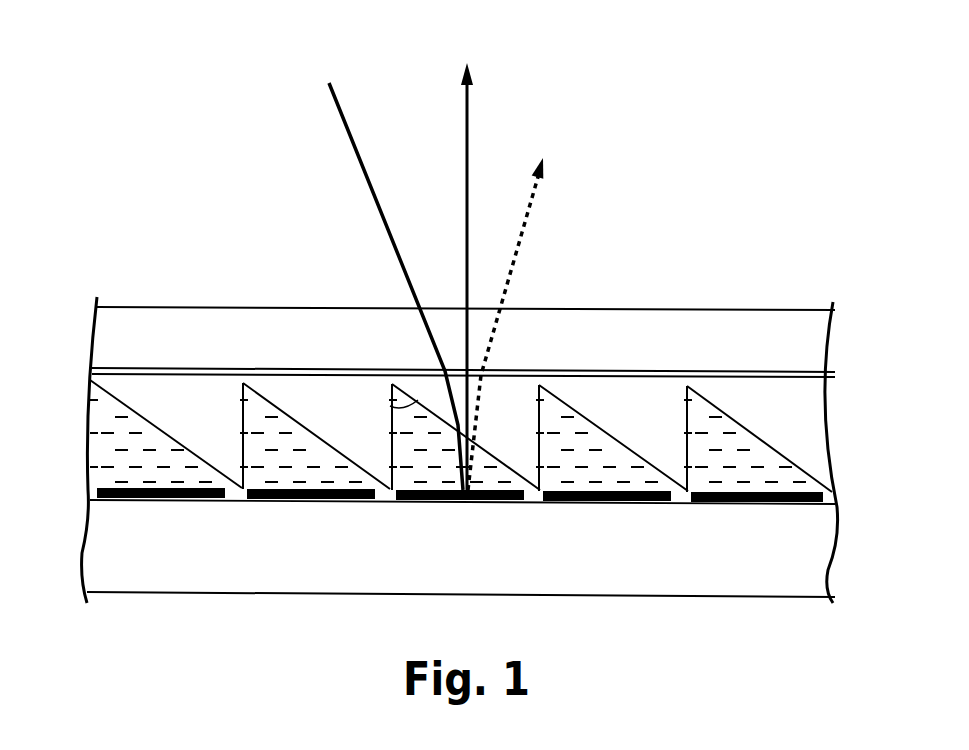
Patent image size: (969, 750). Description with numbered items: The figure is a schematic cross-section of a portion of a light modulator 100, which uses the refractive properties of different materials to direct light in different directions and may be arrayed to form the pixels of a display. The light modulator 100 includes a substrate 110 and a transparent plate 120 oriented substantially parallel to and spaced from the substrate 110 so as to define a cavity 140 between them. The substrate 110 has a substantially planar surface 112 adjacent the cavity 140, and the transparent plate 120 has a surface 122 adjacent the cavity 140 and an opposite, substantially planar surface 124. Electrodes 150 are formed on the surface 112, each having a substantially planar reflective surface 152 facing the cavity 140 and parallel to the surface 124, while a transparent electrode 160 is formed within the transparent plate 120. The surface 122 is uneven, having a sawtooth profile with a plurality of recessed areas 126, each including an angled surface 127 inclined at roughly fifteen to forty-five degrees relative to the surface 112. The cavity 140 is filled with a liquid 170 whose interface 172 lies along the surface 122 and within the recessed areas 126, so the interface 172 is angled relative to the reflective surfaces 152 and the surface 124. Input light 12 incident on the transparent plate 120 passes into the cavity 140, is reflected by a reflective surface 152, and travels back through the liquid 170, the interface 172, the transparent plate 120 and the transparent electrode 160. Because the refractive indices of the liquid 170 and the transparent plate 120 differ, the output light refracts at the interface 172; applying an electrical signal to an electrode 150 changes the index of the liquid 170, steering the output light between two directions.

The light modulator 100 is at (702, 80).
The input light 12 is at (342, 115).
The substrate 110 is at (818, 570).
The surface of substrate 112 is at (87, 493).
The transparent plate 120 is at (817, 293).
The surface of transparent plate 122 is at (115, 402).
The surface of transparent plate 124 is at (183, 308).
The recessed areas 126 is at (388, 422).
The angled surface 127 is at (390, 406).
The cavity 140 is at (297, 460).
The electrodes 150 is at (568, 490).
The reflective surface 152 is at (505, 490).
The transparent electrode 160 is at (117, 370).
The liquid 170 is at (783, 480).
The interface of liquid 172 is at (740, 430).